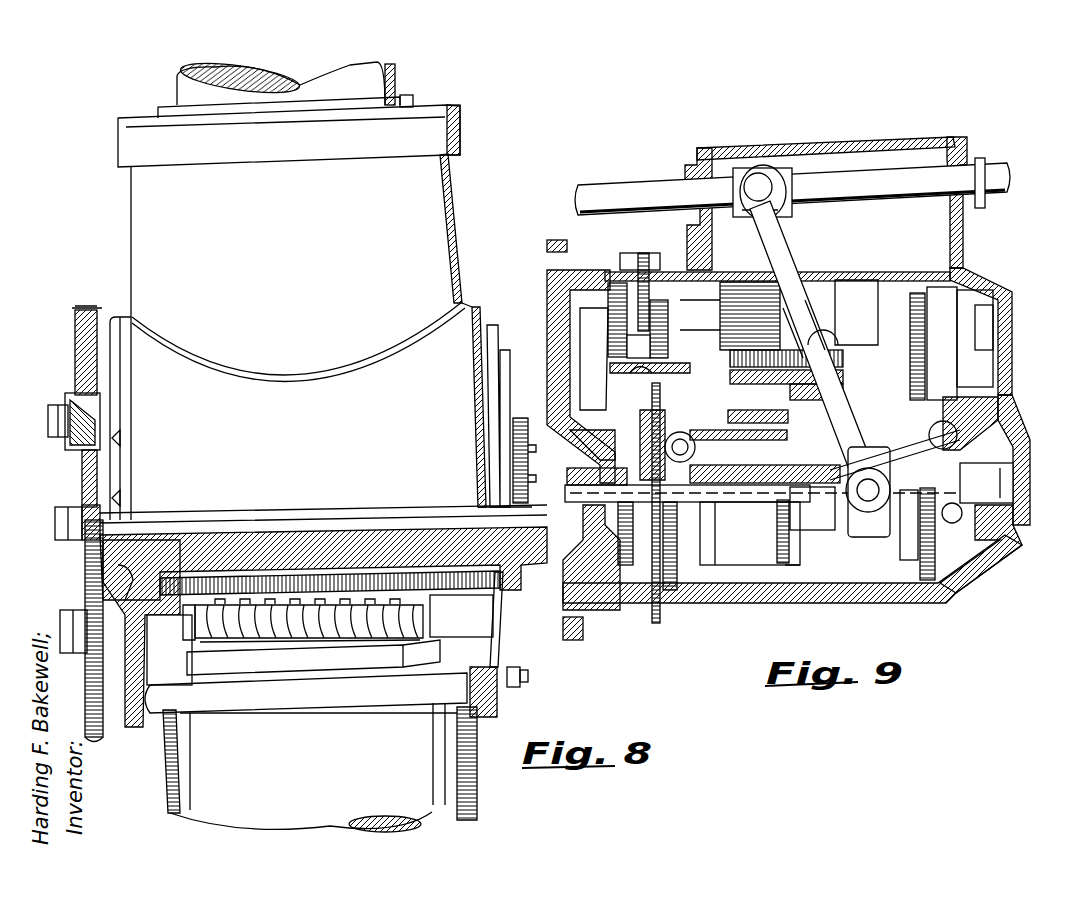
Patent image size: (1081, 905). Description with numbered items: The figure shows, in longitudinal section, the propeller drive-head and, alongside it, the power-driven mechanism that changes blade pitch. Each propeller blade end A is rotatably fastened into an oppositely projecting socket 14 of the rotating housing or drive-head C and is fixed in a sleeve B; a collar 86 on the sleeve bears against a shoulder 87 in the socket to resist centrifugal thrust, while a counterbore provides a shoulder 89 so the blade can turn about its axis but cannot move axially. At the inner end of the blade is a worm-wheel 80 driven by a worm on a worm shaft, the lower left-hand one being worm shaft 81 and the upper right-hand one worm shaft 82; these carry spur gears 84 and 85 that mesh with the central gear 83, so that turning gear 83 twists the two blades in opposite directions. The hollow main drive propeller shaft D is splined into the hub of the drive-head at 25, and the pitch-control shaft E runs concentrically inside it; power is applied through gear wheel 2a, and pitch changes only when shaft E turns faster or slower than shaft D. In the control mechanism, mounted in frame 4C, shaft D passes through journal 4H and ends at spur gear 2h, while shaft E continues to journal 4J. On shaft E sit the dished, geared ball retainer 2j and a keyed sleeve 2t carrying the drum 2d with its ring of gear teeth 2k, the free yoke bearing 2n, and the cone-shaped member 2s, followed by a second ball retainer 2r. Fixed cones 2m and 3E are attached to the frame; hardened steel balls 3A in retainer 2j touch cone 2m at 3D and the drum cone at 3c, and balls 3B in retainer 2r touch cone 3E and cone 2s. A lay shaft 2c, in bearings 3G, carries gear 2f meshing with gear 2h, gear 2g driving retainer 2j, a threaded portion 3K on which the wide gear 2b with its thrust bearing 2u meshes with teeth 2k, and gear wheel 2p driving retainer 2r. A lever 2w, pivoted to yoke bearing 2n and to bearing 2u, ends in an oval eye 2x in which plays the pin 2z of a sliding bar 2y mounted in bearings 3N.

In FIG. 8, the propeller blade end A is at (372, 84).
In FIG. 8, the shoulder 89 is at (455, 155).
In FIG. 8, the socket portion 14 is at (142, 256).
In FIG. 8, the rotating housing or drive-head C is at (453, 350).
In FIG. 8, the spur gear 84 is at (80, 310).
In FIG. 8, the worm shaft 82 is at (72, 415).
In FIG. 8, the blade pitch-control shaft E is at (78, 508).
In FIG. 9, the blade pitch-control shaft E is at (812, 485).
In FIG. 8, the central gear 83 is at (93, 548).
In FIG. 8, the worm shaft 81 is at (84, 620).
In FIG. 8, the spur gear 85 is at (104, 738).
In FIG. 8, the shoulder 87 is at (166, 716).
In FIG. 8, the main drive propeller shaft D is at (286, 538).
In FIG. 9, the main drive propeller shaft D is at (573, 475).
In FIG. 8, the hub spline 25 is at (330, 578).
In FIG. 8, the worm-wheel 80 is at (308, 623).
In FIG. 8, the sleeve B is at (403, 740).
In FIG. 8, the collar 86 is at (498, 678).
In FIG. 8, the gear wheel 2a is at (520, 417).
In FIG. 9, the frame 4C is at (962, 262).
In FIG. 9, the bearing 3G is at (1000, 292).
In FIG. 9, the sliding bar 2y is at (646, 195).
In FIG. 9, the bearing 3N is at (693, 170).
In FIG. 9, the pin 2z is at (761, 188).
In FIG. 9, the oval eye 2x is at (777, 190).
In FIG. 9, the gear 2b is at (762, 297).
In FIG. 9, the threads 3K is at (748, 350).
In FIG. 9, the lay shaft 2c is at (705, 352).
In FIG. 9, the gear 2g is at (658, 300).
In FIG. 9, the gear 2f is at (618, 268).
In FIG. 9, the lever 2w is at (782, 252).
In FIG. 9, the yoke or free running bearing 2u is at (832, 315).
In FIG. 9, the gear wheel 2p is at (912, 300).
In FIG. 9, the dished, geared, multiple-ball retainer 2j is at (672, 442).
In FIG. 9, the contact point 3D is at (668, 470).
In FIG. 9, the contact point 3c is at (705, 440).
In FIG. 9, the hardened steel balls 3A is at (686, 445).
In FIG. 9, the ring of gear teeth 2k is at (780, 427).
In FIG. 9, the cone 2m is at (633, 487).
In FIG. 9, the drum 2d is at (763, 542).
In FIG. 9, the spur gear 2h is at (623, 604).
In FIG. 9, the journal 4H is at (600, 540).
In FIG. 9, the sleeve 2t is at (802, 517).
In FIG. 9, the yoke bearing 2n is at (878, 450).
In FIG. 9, the cone-shaped member 2s is at (908, 448).
In FIG. 9, the ball retainer 2r is at (917, 408).
In FIG. 9, the cone 3E is at (1000, 403).
In FIG. 9, the steel balls 3B is at (990, 423).
In FIG. 9, the journal 4J is at (995, 487).